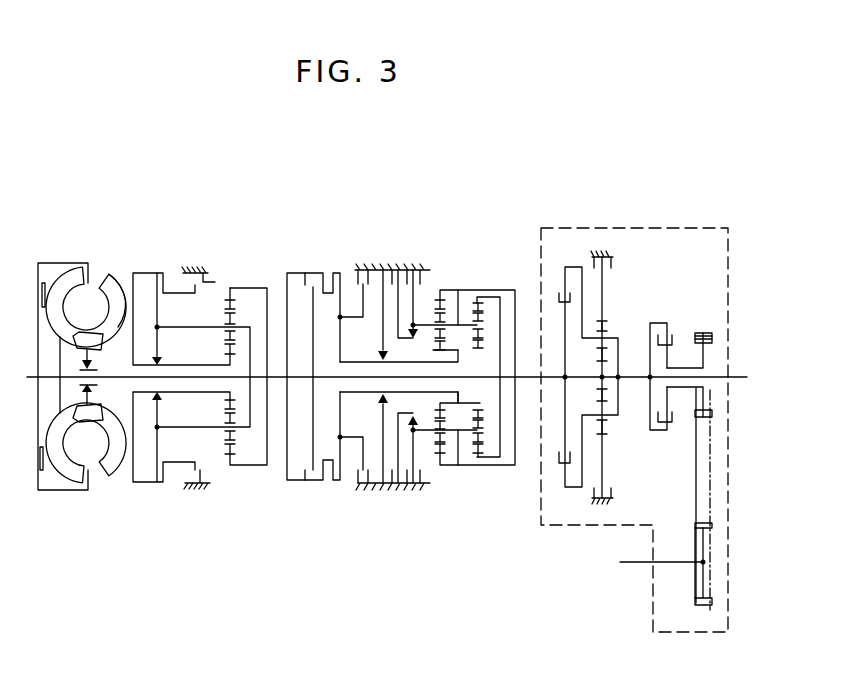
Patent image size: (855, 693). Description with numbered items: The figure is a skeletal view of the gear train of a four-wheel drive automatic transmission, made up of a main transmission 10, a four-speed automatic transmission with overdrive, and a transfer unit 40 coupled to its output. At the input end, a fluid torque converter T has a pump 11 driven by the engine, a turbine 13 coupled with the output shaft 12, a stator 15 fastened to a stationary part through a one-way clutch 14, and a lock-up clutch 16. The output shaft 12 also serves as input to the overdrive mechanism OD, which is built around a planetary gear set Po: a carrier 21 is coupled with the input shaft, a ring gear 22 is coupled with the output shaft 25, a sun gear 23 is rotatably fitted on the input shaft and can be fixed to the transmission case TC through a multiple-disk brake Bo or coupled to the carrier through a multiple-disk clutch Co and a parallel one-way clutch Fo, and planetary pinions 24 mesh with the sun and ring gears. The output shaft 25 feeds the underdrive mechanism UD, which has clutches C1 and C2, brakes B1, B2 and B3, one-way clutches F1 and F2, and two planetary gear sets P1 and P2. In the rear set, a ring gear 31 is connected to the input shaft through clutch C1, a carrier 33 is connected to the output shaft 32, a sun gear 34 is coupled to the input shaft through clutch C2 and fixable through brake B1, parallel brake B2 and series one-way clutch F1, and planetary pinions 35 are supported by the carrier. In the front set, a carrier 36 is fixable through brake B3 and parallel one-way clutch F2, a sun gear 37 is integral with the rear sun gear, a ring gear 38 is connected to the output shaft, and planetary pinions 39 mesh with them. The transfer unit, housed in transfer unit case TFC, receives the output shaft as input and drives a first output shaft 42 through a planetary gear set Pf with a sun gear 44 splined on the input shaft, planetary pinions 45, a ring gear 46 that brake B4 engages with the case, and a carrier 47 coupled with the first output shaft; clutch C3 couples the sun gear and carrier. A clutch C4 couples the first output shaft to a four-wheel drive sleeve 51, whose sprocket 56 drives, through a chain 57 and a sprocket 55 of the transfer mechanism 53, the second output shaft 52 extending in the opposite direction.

The main transmission 10 is at (283, 216).
The pump 11 is at (112, 272).
The output shaft of the torque converter 12 is at (122, 382).
The turbine 13 is at (66, 288).
The one-way clutch 14 is at (82, 404).
The stator 15 is at (75, 345).
The lock-up clutch 16 is at (42, 293).
The carrier 21 is at (268, 450).
The ring gear 22 is at (248, 430).
The sun gear 23 is at (226, 402).
The planetary pinions 24 is at (228, 440).
The output shaft of the overdrive mechanism 25 is at (278, 400).
The ring gear 31 is at (466, 322).
The output shaft of the underdrive mechanism 32 is at (527, 385).
The carrier 33 is at (480, 295).
The sun gear 34 is at (465, 352).
The planetary pinions 35 is at (482, 312).
The carrier 36 is at (422, 322).
The sun gear 37 is at (450, 467).
The ring gear 38 is at (458, 318).
The planetary pinions 39 is at (430, 485).
The transfer unit 40 is at (607, 217).
The first output shaft 42 is at (737, 376).
The sun gear 44 is at (604, 390).
The planetary pinions 45 is at (606, 427).
The ring gear 46 is at (606, 437).
The carrier 47 is at (620, 342).
The 4-wheel drive sleeve 51 is at (685, 366).
The second output shaft 52 is at (662, 563).
The transfer mechanism 53 is at (714, 475).
The sprocket 55 is at (707, 575).
The sprocket 56 is at (712, 347).
The chain 57 is at (712, 512).
The torque converter T is at (78, 258).
The overdrive mechanism OD is at (193, 252).
The underdrive mechanism UD is at (392, 217).
The multiple-disk clutch Co is at (157, 272).
The multiple-disk brake Bo is at (215, 282).
The one-way clutch Fo is at (155, 400).
The planetary gear set Po is at (240, 300).
The multiple disk clutch C1 is at (305, 272).
The multiple disk clutch C2 is at (330, 272).
The clutch C3 is at (563, 292).
The clutch C4 is at (655, 323).
The multiple disk brake B1 is at (368, 268).
The multiple disk brake B2 is at (390, 268).
The multiple disk brake B3 is at (428, 268).
The brake B4 is at (596, 256).
The one-way clutch F1 is at (356, 485).
The one-way clutch F2 is at (397, 485).
The front planetary gear set P1 is at (444, 478).
The rear planetary gear set P2 is at (482, 467).
The planetary gear set Pf is at (618, 308).
The transmission case TC is at (194, 490).
The transfer unit case TFC is at (597, 502).